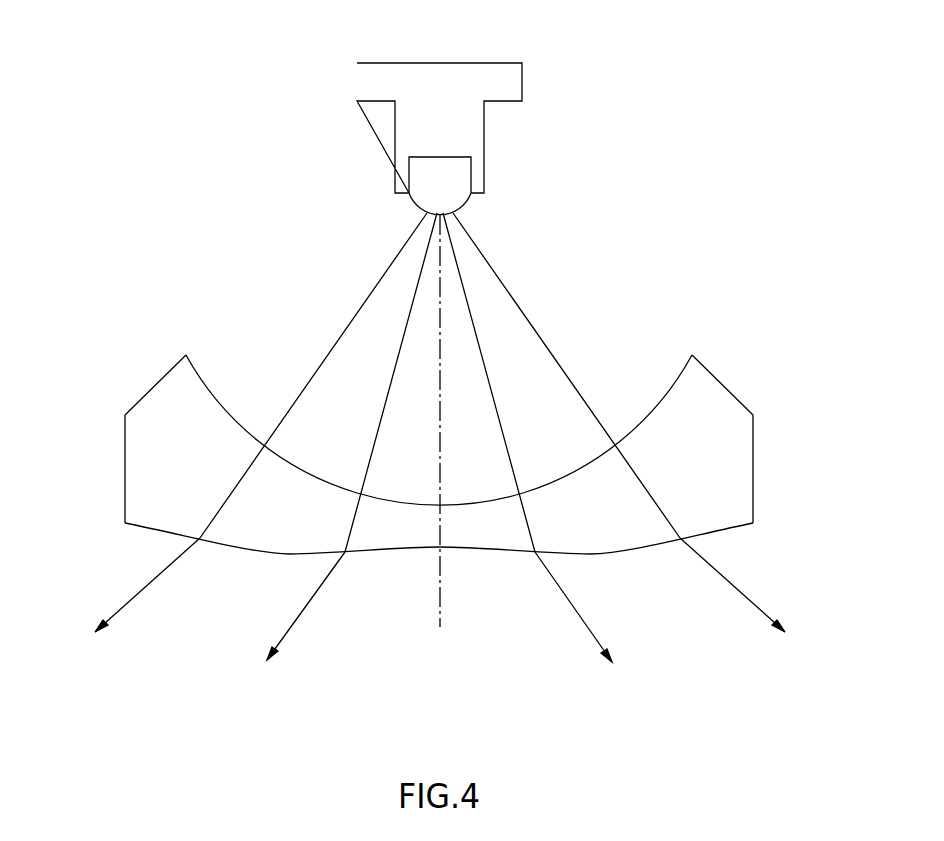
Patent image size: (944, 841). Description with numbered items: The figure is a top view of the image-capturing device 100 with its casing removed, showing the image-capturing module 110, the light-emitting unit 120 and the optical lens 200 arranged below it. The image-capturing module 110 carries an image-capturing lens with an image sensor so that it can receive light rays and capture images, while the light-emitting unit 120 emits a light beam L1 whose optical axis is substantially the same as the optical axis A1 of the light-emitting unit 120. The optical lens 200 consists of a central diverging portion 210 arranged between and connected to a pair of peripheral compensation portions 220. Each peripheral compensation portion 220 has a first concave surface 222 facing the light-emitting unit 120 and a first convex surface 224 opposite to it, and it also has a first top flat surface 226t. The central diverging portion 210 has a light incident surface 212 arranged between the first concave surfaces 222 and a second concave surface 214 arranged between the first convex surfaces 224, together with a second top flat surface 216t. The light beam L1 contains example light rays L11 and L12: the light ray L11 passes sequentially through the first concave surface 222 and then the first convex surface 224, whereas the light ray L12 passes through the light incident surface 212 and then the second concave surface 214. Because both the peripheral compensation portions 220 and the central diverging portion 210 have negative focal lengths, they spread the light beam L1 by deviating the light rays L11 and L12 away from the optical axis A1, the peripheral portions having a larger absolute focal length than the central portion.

The image-capturing device 100 is at (193, 45).
The image-capturing module 110 is at (372, 81).
The light-emitting unit 120 is at (435, 185).
The optical lens 200 is at (157, 377).
The central diverging portion 210 is at (492, 532).
The light incident surface 212 is at (400, 500).
The second concave surface 214 is at (387, 550).
The second top flat surface 216t is at (558, 530).
The peripheral compensation portion 220 is at (125, 470).
The first concave surface 222 is at (220, 398).
The first convex surface 224 is at (225, 550).
The first top flat surface 226t is at (708, 415).
The optical axis A1 is at (440, 608).
The light beam L1 is at (667, 270).
The light ray L11 is at (150, 583).
The light ray L12 is at (297, 623).